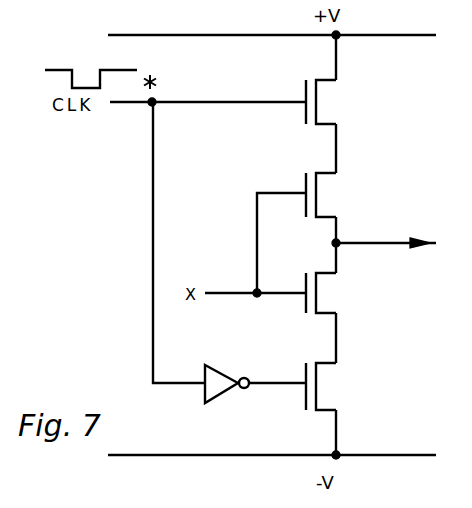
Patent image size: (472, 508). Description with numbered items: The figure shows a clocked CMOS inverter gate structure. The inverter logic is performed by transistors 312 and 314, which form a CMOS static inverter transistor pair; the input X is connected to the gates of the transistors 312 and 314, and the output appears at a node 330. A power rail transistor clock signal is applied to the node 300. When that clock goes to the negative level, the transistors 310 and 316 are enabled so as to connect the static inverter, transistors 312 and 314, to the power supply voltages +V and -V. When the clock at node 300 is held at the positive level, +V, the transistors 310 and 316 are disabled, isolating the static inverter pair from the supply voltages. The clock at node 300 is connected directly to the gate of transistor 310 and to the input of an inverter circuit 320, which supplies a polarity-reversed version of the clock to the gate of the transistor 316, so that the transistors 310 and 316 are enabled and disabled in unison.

The node 300 is at (156, 98).
The transistor 310 is at (340, 87).
The transistor 312 is at (338, 206).
The transistor 314 is at (340, 306).
The transistor 316 is at (340, 398).
The inverter circuit 320 is at (232, 392).
The node 330 is at (388, 240).